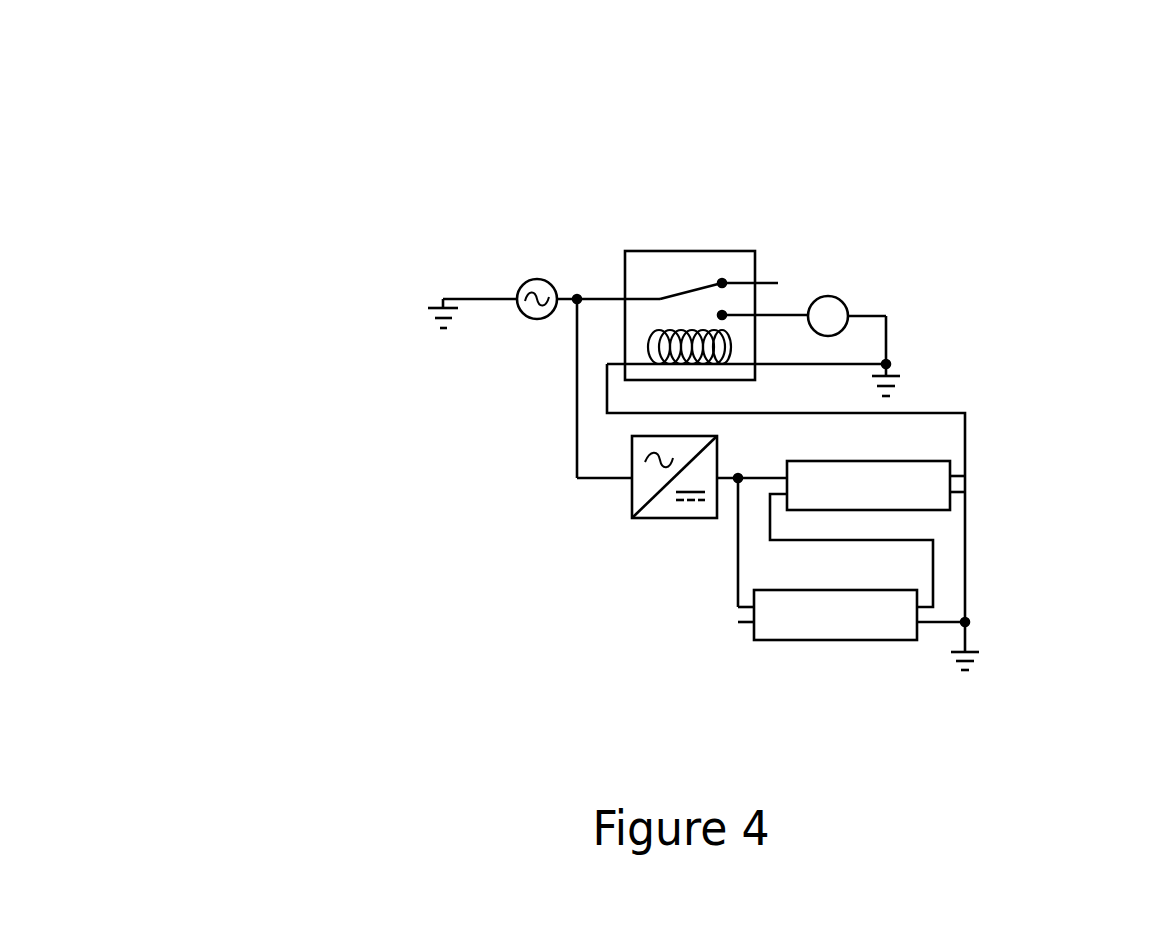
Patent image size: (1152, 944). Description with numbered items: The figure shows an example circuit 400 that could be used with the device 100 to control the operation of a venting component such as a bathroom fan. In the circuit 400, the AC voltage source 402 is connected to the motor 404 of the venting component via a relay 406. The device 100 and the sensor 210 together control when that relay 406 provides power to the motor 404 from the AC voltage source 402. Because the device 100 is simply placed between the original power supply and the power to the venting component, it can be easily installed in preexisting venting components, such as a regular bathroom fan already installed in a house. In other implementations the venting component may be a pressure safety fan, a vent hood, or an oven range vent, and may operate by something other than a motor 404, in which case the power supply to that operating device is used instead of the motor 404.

The circuit 400 is at (78, 103).
The AC voltage source 402 is at (526, 319).
The motor 404 is at (828, 296).
The relay 406 is at (655, 251).
The device 100 is at (953, 487).
The sensor 210 is at (827, 640).